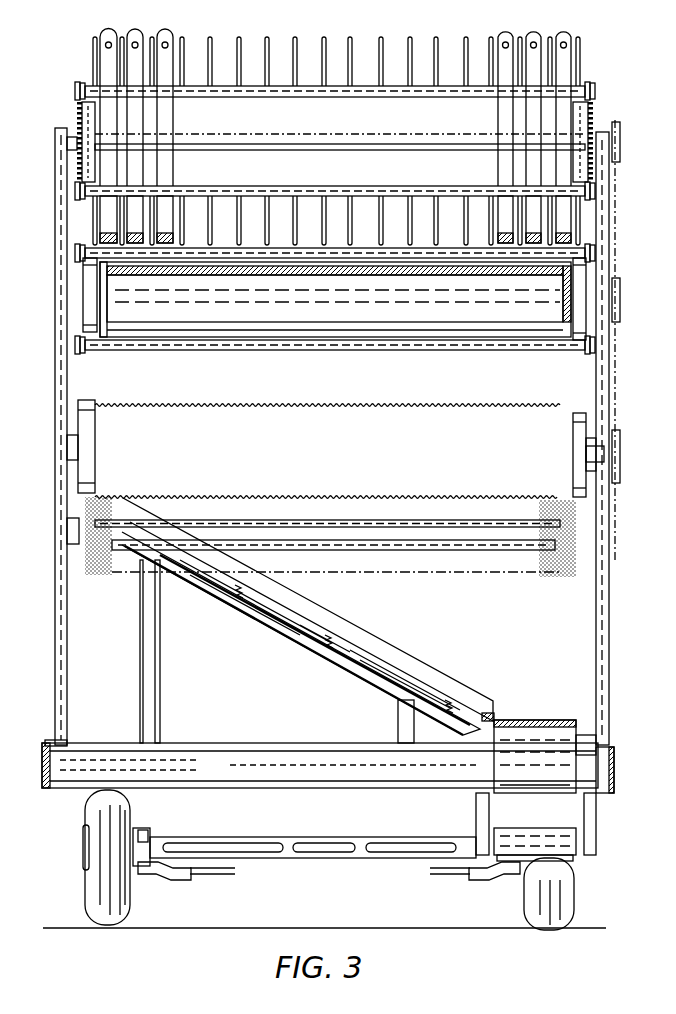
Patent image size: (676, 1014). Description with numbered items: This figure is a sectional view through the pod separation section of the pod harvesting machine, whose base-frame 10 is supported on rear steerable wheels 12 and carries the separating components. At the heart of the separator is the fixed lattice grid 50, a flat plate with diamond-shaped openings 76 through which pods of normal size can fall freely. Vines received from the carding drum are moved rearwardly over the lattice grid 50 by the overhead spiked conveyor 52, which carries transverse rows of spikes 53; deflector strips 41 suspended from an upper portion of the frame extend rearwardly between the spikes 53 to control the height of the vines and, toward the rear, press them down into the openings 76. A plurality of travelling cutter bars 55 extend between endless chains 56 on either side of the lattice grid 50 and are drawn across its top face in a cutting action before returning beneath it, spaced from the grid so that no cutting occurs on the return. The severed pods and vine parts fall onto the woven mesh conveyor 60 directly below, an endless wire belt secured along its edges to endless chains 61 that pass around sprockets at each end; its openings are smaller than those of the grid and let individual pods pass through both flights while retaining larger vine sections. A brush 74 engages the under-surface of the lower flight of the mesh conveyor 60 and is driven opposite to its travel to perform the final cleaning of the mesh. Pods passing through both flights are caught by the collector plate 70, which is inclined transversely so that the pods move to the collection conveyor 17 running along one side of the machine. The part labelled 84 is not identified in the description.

The base-frame 10 is at (65, 368).
The rear steerable wheels 12 is at (115, 815).
The collection conveyor 17 is at (528, 720).
The deflector strips 41 is at (170, 123).
The lattice grid 50 is at (334, 318).
The overhead spiked conveyor 52 is at (82, 82).
The spikes 53 is at (347, 37).
The travelling cutter bars 55 is at (270, 258).
The endless chains 56 is at (87, 356).
The woven mesh conveyor 60 is at (524, 404).
The endless chains 61 is at (589, 405).
The collector plate 70 is at (377, 648).
The brush 74 is at (100, 577).
The openings 76 is at (408, 274).
The support bar 84 is at (517, 770).